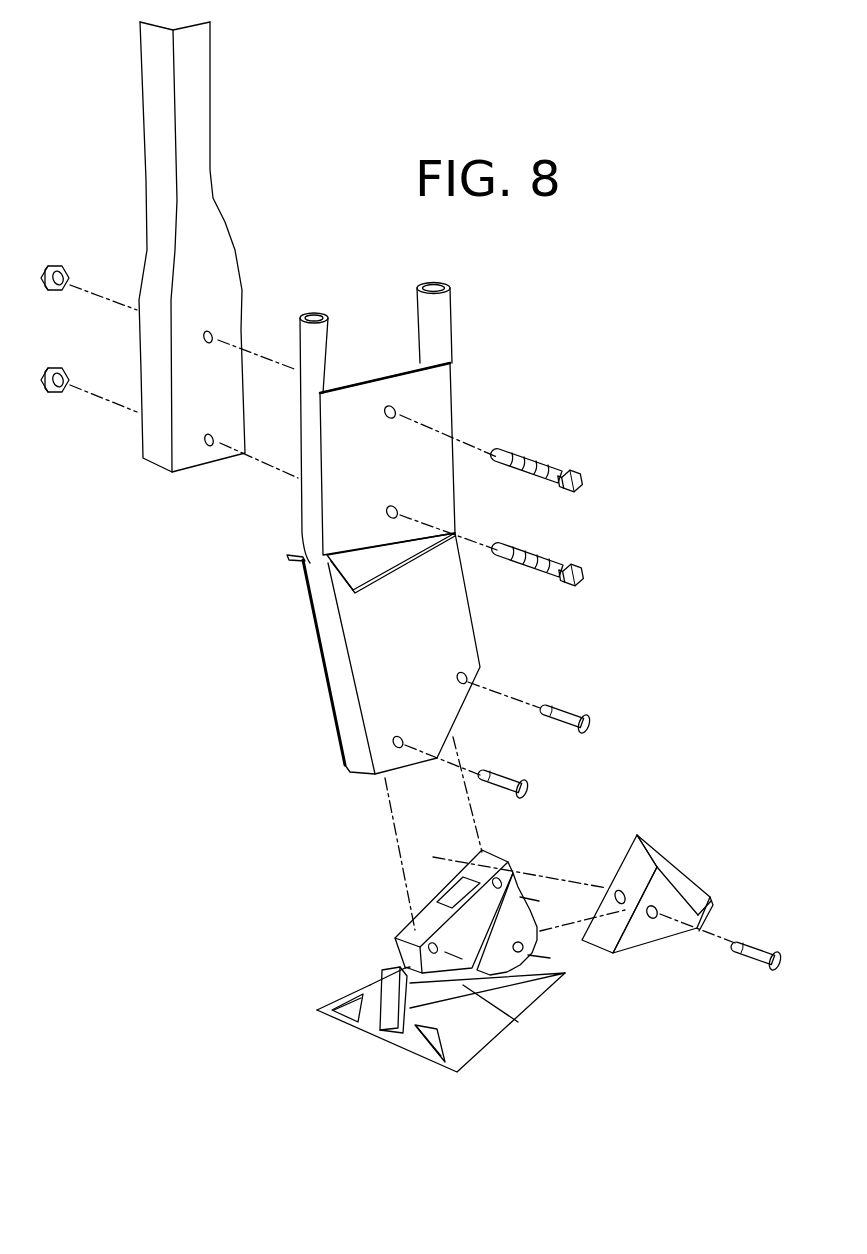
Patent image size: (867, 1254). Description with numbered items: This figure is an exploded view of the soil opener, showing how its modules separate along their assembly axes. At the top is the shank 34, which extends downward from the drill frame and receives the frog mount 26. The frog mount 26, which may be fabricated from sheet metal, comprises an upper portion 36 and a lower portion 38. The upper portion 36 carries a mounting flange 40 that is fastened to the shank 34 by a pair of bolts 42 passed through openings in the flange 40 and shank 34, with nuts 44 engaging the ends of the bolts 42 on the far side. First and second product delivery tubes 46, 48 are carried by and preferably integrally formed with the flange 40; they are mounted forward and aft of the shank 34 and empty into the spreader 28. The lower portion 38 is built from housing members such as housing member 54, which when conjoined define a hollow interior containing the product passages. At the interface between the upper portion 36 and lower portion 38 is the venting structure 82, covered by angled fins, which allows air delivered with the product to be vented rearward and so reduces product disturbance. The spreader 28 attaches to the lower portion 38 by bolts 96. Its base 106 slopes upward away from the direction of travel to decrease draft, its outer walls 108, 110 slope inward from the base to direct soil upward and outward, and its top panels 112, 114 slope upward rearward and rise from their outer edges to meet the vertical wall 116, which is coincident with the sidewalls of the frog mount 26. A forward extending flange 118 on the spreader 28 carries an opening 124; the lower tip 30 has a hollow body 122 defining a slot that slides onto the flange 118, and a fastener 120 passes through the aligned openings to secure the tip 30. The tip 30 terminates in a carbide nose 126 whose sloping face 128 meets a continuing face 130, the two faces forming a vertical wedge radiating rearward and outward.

The frog mount 26 is at (293, 594).
The spreader 28 is at (416, 1038).
The lower tip 30 is at (684, 864).
The shank 34 is at (205, 83).
The upper portion 36 is at (459, 409).
The lower portion 38 is at (452, 655).
The mounting flange 40 is at (370, 395).
The bolts 42 is at (582, 486).
The nuts 44 is at (52, 297).
The first product delivery tube 46 is at (425, 306).
The second product delivery tube 48 is at (303, 333).
The housing member 54 is at (368, 713).
The venting structure 82 is at (404, 580).
The bolts 96 is at (528, 779).
The base 106 is at (388, 1042).
The outer wall 108 is at (470, 1066).
The outer wall 110 is at (326, 1007).
The top panel 112 is at (467, 1008).
The top panel 114 is at (370, 985).
The vertical wall 116 is at (521, 1021).
The forward extending flange 118 is at (535, 946).
The fastener 120 is at (758, 957).
The hollow body 122 is at (668, 889).
The opening 124 is at (519, 945).
The nose 126 is at (712, 895).
The sloping face 128 is at (712, 911).
The continuing face 130 is at (676, 865).